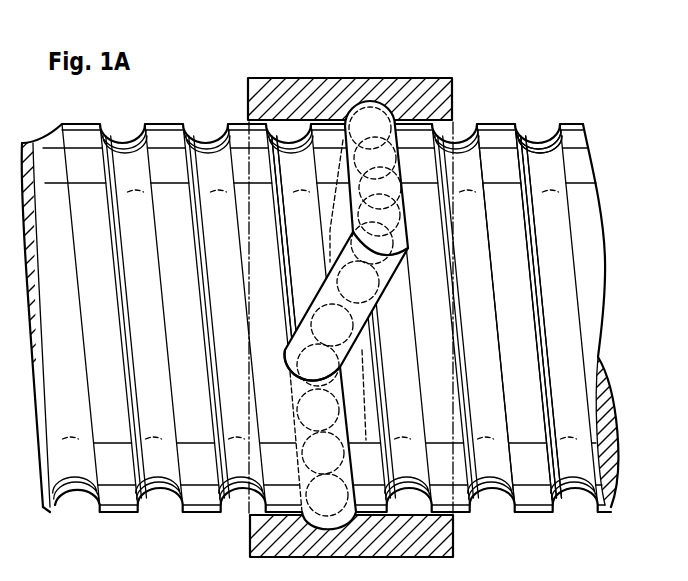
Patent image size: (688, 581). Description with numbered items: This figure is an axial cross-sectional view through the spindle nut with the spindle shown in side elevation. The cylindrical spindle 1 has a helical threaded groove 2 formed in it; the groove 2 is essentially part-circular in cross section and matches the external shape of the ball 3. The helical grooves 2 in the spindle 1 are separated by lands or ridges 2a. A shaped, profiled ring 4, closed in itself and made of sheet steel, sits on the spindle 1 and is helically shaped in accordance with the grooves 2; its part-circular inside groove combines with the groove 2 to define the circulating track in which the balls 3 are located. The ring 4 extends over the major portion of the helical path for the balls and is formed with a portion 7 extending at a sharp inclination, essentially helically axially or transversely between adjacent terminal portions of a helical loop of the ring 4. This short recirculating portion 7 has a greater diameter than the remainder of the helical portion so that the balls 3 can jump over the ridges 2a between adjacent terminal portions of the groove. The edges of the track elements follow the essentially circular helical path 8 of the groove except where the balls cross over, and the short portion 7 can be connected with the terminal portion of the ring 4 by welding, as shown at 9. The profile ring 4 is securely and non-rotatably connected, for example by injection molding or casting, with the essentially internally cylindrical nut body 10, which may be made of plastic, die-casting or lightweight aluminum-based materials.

The spindle 1 is at (323, 301).
The helical threaded groove 2 is at (536, 160).
The ridges 2a is at (496, 137).
The ball 3 is at (350, 375).
The profiled ring 4 is at (288, 420).
The recirculating portion 7 is at (347, 315).
The helical path 8 is at (350, 441).
The weld 9 is at (367, 244).
The nut body 10 is at (298, 97).